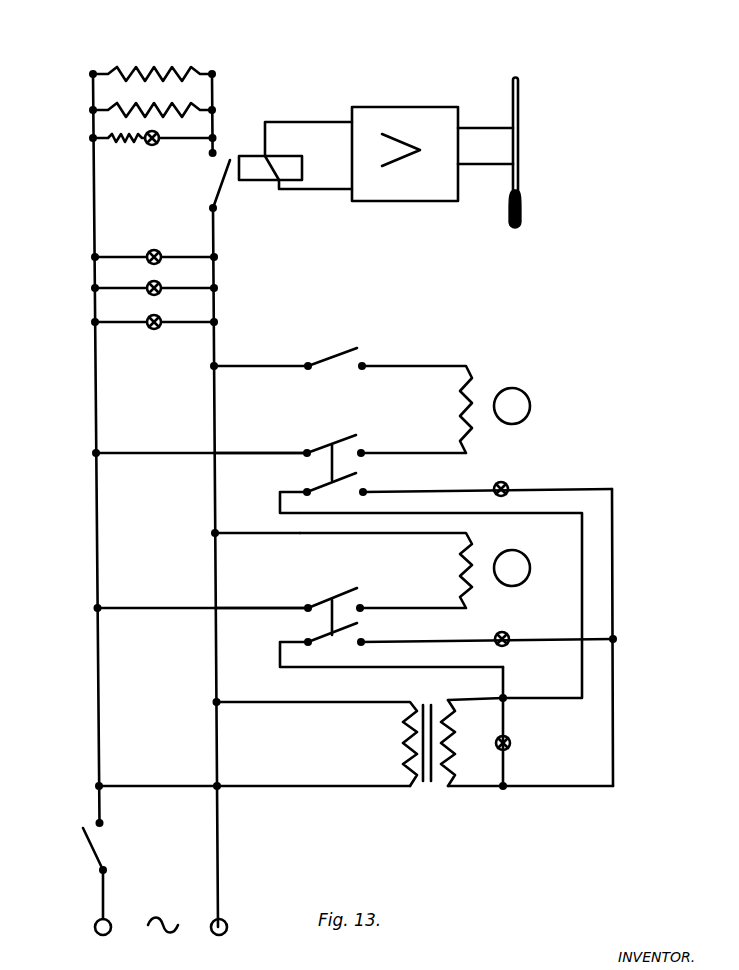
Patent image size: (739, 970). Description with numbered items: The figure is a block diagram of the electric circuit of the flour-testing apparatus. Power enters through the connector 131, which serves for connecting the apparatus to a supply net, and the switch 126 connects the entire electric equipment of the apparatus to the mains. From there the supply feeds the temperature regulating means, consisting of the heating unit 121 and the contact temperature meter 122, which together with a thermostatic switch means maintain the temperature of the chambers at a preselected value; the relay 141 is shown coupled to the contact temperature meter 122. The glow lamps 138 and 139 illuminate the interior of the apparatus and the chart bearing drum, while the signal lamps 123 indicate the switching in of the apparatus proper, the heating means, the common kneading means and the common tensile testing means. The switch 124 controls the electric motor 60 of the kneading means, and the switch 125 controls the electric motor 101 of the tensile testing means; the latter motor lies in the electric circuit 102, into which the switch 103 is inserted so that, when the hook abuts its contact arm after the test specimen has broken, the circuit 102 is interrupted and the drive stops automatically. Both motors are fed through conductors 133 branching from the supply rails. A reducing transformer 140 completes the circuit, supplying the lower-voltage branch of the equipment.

The heating unit 121 is at (148, 107).
The signal lamps 123 is at (146, 141).
The relay 141 is at (368, 105).
The contact temperature meter 122 is at (518, 143).
The glow lamp 139 is at (146, 253).
The glow lamp 138 is at (145, 286).
The electric circuit 102 is at (233, 452).
The switch 103 is at (330, 355).
The electric motor 101 is at (517, 400).
The switch 124 is at (363, 449).
The electric motor 60 is at (520, 560).
The supply conductors 133 is at (240, 534).
The switch 125 is at (364, 603).
The reducing transformer 140 is at (415, 786).
The switch 126 is at (98, 821).
The connector 131 is at (212, 932).